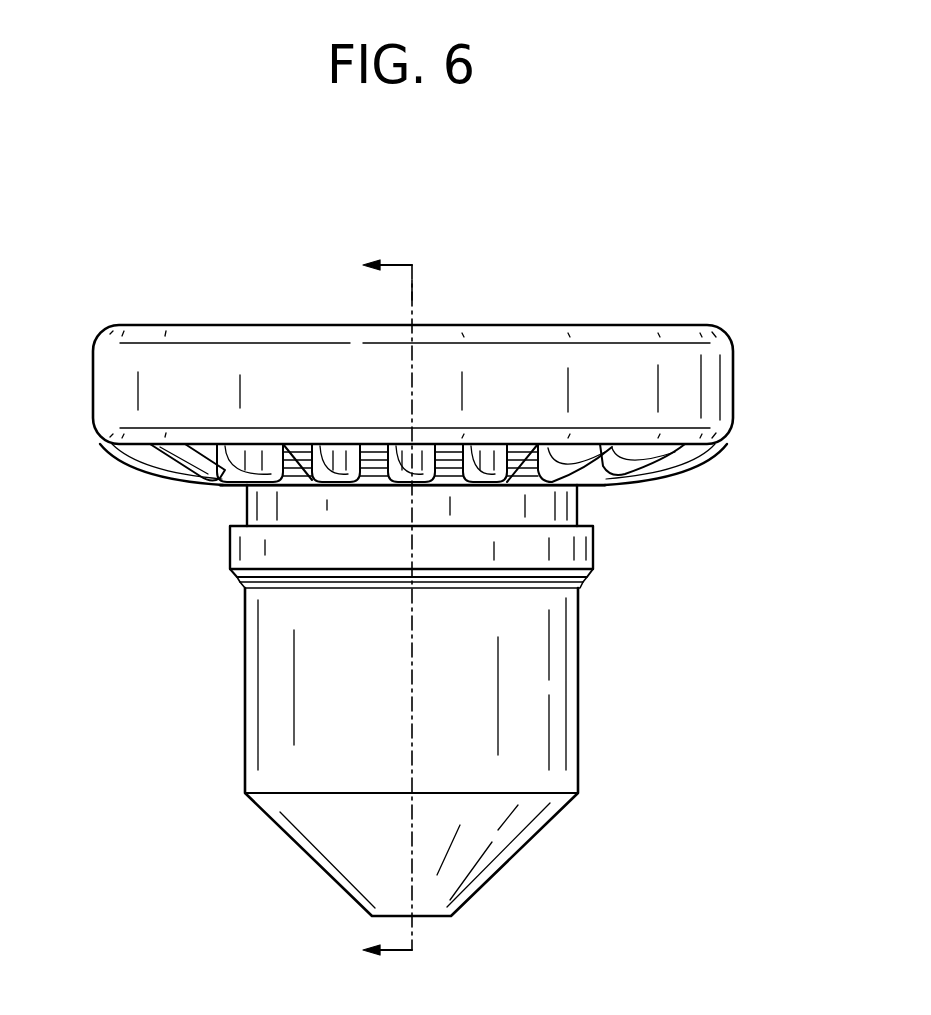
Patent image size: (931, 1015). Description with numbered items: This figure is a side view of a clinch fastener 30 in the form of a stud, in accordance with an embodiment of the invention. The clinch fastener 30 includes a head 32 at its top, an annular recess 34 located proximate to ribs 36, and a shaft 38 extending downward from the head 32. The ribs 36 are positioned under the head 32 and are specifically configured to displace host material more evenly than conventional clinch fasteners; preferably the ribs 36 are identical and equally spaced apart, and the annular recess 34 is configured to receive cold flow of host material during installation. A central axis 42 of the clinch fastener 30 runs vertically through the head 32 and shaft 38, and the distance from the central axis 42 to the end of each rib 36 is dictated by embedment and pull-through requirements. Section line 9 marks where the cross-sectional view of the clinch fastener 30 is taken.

The section line 9- 9 is at (387, 608).
The clinch fastener 30 is at (707, 273).
The head 32 is at (715, 378).
The annular recess 34 is at (580, 512).
The ribs 36 is at (268, 483).
The shaft 38 is at (553, 648).
The central axis 42 is at (414, 298).